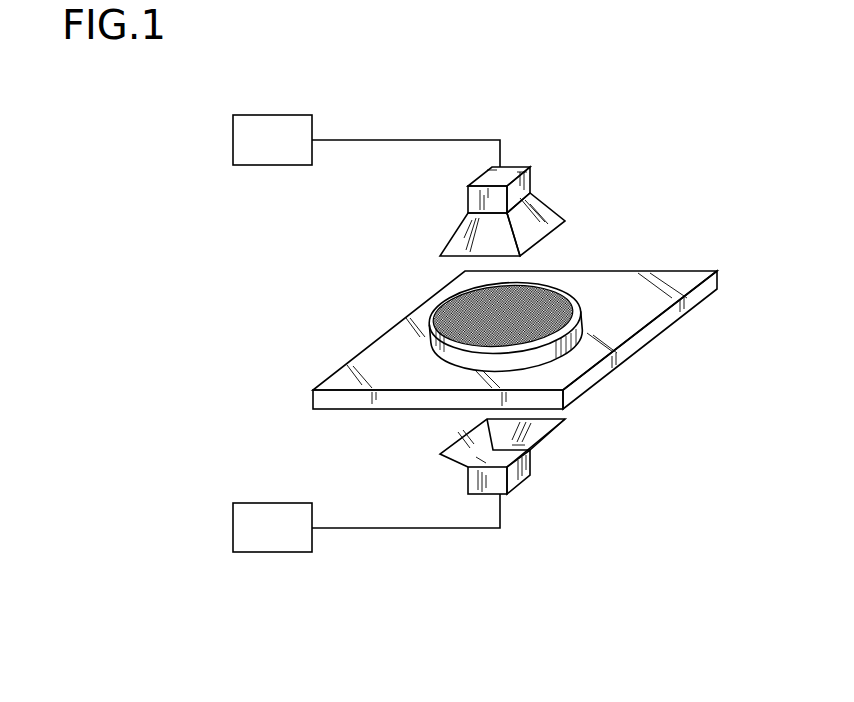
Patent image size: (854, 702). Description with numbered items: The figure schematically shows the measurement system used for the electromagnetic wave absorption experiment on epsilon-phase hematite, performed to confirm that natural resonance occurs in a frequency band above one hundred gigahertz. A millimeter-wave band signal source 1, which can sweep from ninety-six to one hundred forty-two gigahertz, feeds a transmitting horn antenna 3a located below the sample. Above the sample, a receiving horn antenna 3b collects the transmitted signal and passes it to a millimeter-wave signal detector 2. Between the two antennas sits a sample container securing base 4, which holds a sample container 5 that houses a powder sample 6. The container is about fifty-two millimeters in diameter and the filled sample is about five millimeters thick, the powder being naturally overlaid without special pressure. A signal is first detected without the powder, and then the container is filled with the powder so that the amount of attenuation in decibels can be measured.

The millimeter-wave band signal source 1 is at (366, 523).
The millimeter-wave signal detector 2 is at (366, 141).
The transmitting horn antenna 3a is at (511, 456).
The receiving horn antenna 3b is at (510, 211).
The sample container securing base 4 is at (525, 340).
The sample container 5 is at (534, 282).
The powder sample 6 is at (503, 316).